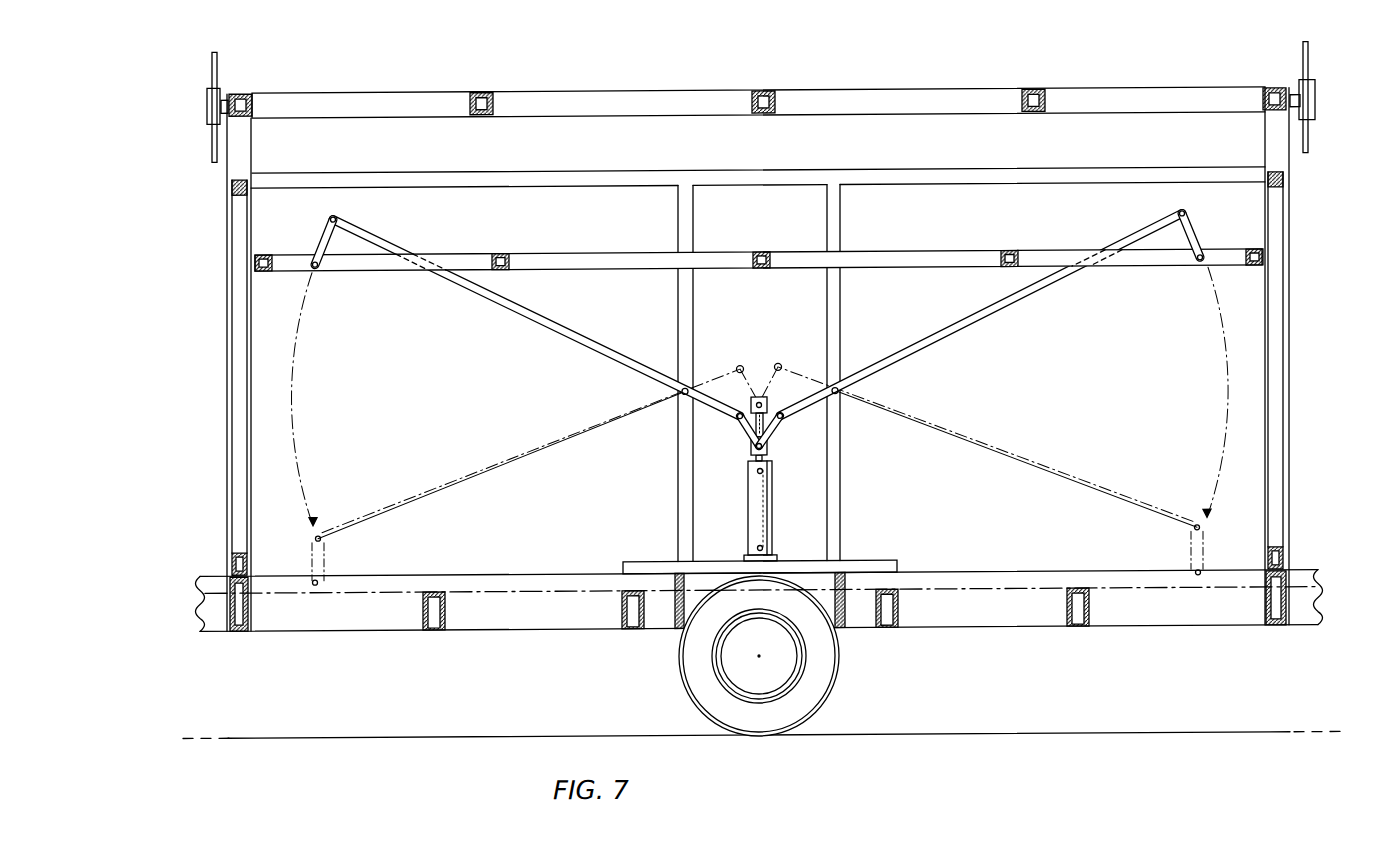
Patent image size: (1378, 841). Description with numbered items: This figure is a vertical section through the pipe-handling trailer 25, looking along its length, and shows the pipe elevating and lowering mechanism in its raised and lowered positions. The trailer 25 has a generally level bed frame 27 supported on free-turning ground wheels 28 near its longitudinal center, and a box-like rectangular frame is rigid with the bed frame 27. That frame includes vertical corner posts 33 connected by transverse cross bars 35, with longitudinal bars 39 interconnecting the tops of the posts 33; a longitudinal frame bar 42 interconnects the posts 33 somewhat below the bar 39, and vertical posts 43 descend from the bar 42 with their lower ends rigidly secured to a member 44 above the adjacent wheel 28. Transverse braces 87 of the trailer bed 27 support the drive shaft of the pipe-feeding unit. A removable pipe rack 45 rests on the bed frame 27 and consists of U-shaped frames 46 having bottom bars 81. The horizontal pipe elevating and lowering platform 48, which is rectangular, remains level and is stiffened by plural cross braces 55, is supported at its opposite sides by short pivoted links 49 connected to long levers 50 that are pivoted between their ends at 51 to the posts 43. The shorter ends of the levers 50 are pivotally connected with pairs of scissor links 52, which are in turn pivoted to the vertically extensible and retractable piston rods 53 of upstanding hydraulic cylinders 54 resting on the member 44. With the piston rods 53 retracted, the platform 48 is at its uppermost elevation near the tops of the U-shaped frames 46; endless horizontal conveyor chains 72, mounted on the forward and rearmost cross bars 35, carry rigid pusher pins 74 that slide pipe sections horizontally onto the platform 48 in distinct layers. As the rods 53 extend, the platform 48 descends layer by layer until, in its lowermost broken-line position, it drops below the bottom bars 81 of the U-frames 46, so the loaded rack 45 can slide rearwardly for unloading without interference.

The trailer 25 is at (564, 629).
The bed frame 27 is at (1008, 622).
The ground wheels 28 is at (836, 668).
The vertical corner posts 33 is at (250, 154).
The transverse cross bars 35 is at (248, 91).
The longitudinal bars 39 is at (661, 91).
The longitudinal frame bar 42 is at (996, 173).
The vertical posts 43 is at (823, 202).
The member 44 is at (872, 562).
The pipe rack 45 is at (226, 334).
The U-shaped frames 46 is at (240, 396).
The pipe elevating and lowering platform 48 is at (1151, 269).
The short pivoted links 49 is at (1218, 231).
The long levers 50 is at (554, 328).
The pivot 51 is at (680, 391).
The scissor links 52 is at (747, 430).
The piston rods 53 is at (766, 453).
The hydraulic cylinders 54 is at (768, 503).
The cross braces 55 is at (262, 269).
The horizontal conveyor chains 72 is at (207, 104).
The pusher pins 74 is at (212, 52).
The bottom bars 81 is at (230, 564).
The transverse braces 87 is at (423, 620).